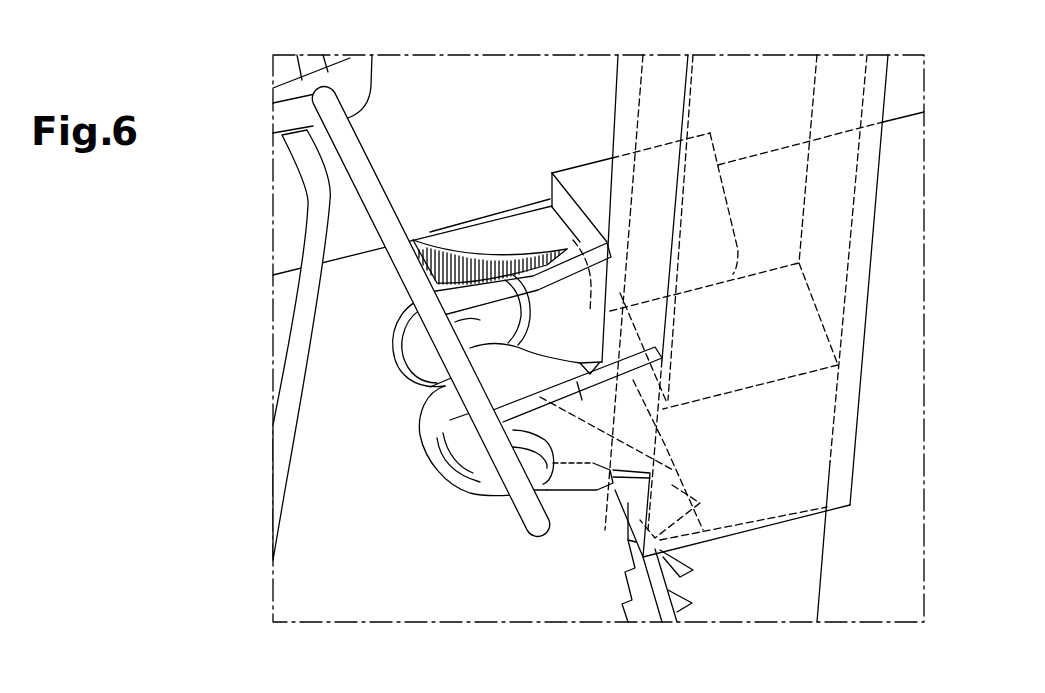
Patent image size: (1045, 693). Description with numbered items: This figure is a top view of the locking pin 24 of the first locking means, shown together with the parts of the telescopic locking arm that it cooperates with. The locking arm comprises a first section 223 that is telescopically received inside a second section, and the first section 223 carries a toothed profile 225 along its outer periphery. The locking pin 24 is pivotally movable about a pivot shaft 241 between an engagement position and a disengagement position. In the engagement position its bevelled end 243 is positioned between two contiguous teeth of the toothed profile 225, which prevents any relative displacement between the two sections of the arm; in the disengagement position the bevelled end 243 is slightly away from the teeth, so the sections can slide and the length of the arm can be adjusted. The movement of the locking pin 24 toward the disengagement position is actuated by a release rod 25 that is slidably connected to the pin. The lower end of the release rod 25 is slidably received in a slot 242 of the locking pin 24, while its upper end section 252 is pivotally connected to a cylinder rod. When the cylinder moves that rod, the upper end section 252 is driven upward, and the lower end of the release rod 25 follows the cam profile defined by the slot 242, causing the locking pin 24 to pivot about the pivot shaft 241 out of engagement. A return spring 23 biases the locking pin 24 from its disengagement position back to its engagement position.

The return spring 23 is at (520, 277).
The locking pin 24 is at (440, 405).
The release rod 25 is at (528, 527).
The first section 223 is at (783, 606).
The toothed profile 225 is at (661, 594).
The pivot shaft 241 is at (493, 488).
The slot 242 is at (585, 484).
The bevelled end 243 is at (674, 470).
The upper end section 252 is at (324, 116).